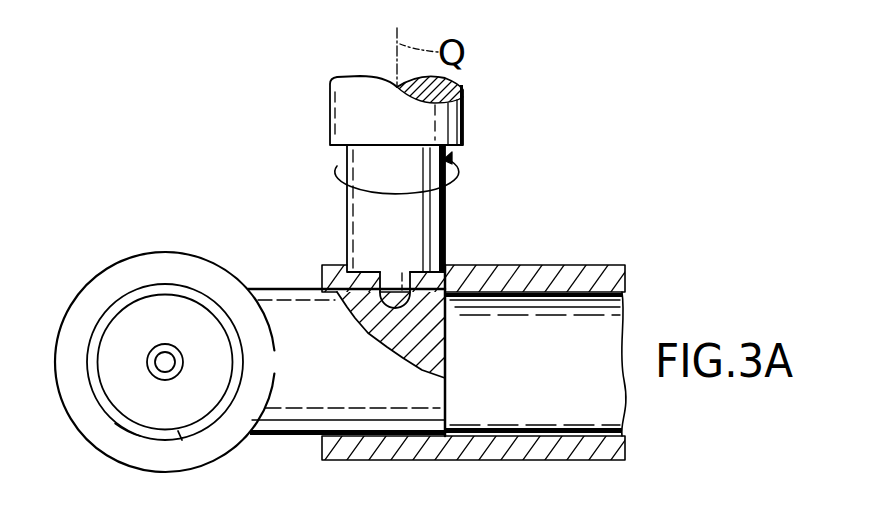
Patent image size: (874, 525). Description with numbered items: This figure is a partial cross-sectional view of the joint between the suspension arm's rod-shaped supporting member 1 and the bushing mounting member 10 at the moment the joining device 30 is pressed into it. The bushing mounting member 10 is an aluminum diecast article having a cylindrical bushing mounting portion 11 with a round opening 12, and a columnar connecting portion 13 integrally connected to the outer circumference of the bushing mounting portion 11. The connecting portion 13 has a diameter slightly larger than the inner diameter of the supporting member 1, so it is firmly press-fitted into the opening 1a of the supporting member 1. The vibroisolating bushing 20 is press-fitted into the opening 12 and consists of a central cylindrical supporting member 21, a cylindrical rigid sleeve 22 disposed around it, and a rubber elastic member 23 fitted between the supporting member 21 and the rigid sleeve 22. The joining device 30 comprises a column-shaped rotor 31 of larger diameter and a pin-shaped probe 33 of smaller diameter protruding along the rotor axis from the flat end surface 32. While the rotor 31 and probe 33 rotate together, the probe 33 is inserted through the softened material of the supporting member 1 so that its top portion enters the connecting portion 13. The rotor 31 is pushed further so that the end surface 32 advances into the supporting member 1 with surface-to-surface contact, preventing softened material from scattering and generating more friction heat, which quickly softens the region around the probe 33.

The supporting member 1 is at (488, 355).
The opening of the supporting member 1a is at (357, 457).
The bushing mounting member 10 is at (147, 349).
The bushing mounting portion 11 is at (212, 447).
The opening 12 is at (186, 433).
The connecting portion 13 is at (294, 420).
The vibroisolating bushing 20 is at (119, 432).
The central cylindrical supporting member 21 is at (143, 360).
The rigid sleeve 22 is at (138, 293).
The rubber elastic member 23 is at (128, 333).
The joining device 30 is at (327, 108).
The rotor 31 is at (436, 212).
The end surface of the rotor 32 is at (442, 285).
The probe 33 is at (408, 305).